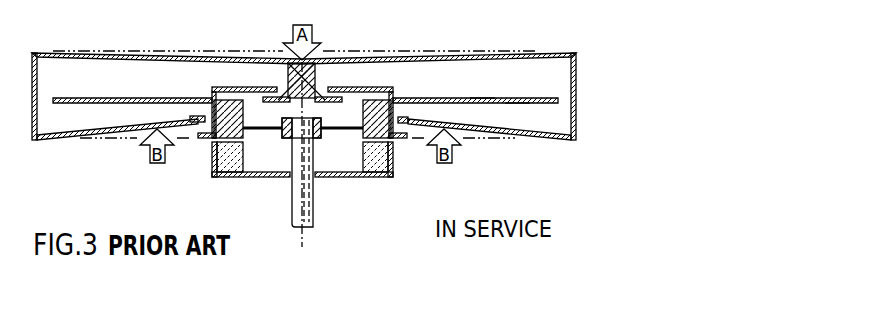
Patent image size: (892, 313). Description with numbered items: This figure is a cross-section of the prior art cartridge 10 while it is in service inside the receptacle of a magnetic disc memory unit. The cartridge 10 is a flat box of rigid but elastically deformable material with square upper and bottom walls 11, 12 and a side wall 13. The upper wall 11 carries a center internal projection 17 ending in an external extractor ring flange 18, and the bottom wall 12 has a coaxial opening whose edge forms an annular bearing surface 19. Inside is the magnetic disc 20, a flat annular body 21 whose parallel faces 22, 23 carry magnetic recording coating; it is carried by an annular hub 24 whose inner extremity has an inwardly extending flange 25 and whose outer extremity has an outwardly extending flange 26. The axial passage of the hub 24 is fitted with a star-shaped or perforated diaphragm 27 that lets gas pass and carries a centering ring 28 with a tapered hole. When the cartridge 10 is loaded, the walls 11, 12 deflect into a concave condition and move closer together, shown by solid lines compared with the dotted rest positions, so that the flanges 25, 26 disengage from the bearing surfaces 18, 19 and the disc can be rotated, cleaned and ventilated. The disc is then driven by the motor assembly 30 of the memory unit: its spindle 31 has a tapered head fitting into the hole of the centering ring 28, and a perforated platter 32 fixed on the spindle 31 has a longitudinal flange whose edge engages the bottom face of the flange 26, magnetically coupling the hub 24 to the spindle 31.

The cartridge 10 is at (100, 162).
The upper wall 11 is at (98, 60).
The bottom wall 12 is at (104, 112).
The side wall 13 is at (37, 80).
The internal projection 17 is at (287, 77).
The extractor ring flange 18 is at (244, 119).
The annular bearing surface 19 is at (197, 118).
The magnetic disc 20 is at (445, 89).
The flat annular body 21 is at (562, 98).
The face 22 is at (485, 71).
The face 23 is at (518, 102).
The annular hub 24 is at (359, 119).
The inwardly extending flange 25 is at (384, 82).
The outwardly extending flange 26 is at (397, 141).
The diaphragm 27 is at (318, 139).
The centering ring 28 is at (318, 154).
The motor assembly 30 is at (268, 203).
The spindle 31 is at (316, 210).
The platter 32 is at (383, 177).